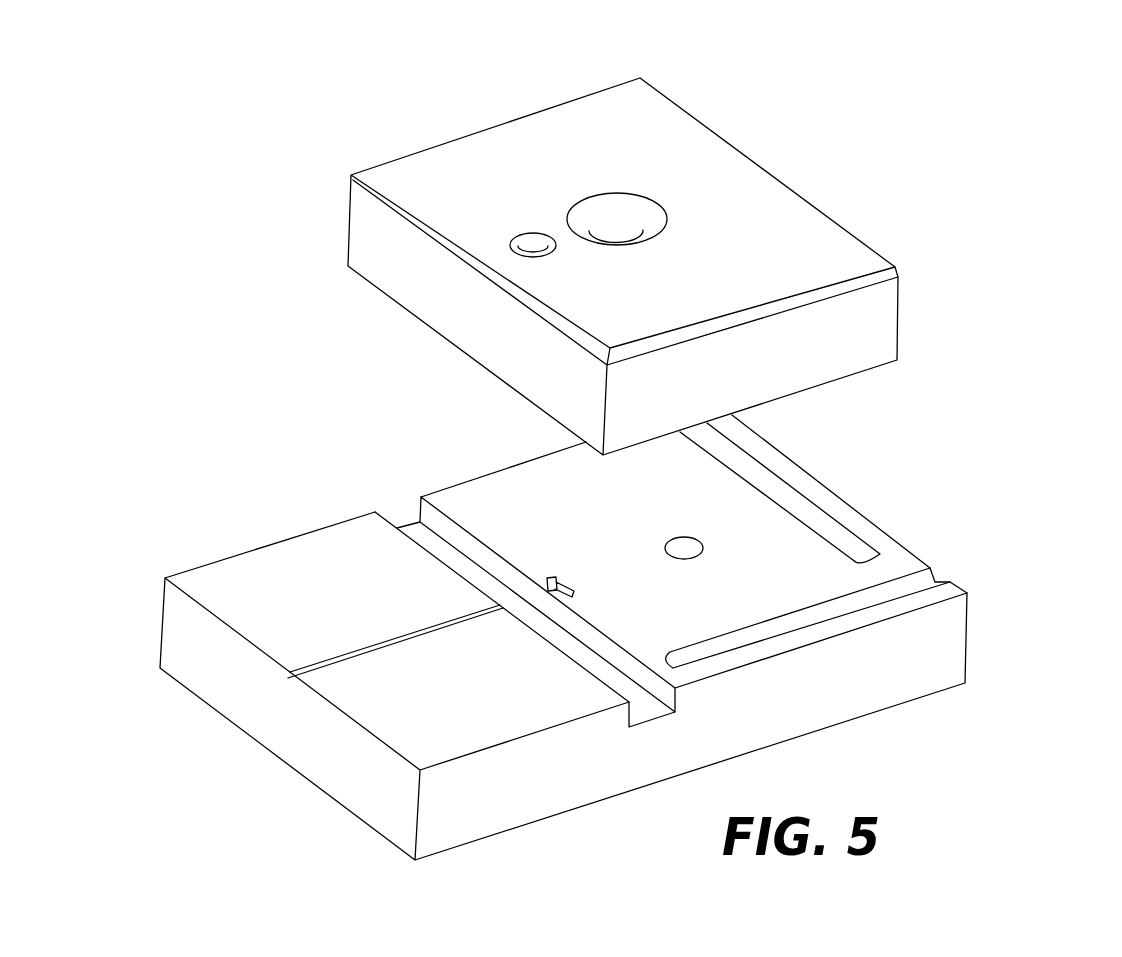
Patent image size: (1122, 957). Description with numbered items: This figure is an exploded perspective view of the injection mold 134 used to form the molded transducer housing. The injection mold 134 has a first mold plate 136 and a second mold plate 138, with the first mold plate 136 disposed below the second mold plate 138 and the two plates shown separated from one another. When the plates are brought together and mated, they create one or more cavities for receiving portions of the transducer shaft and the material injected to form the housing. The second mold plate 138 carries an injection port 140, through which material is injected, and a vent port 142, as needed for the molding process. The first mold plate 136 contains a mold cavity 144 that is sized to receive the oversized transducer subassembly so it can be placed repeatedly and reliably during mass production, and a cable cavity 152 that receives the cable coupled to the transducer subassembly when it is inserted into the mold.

The injection mold 134 is at (637, 630).
The first mold plate 136 is at (903, 545).
The second mold plate 138 is at (701, 258).
The injection port 140 is at (615, 214).
The vent port 142 is at (533, 240).
The mold cavity 144 is at (553, 577).
The cable cavity 152 is at (548, 592).